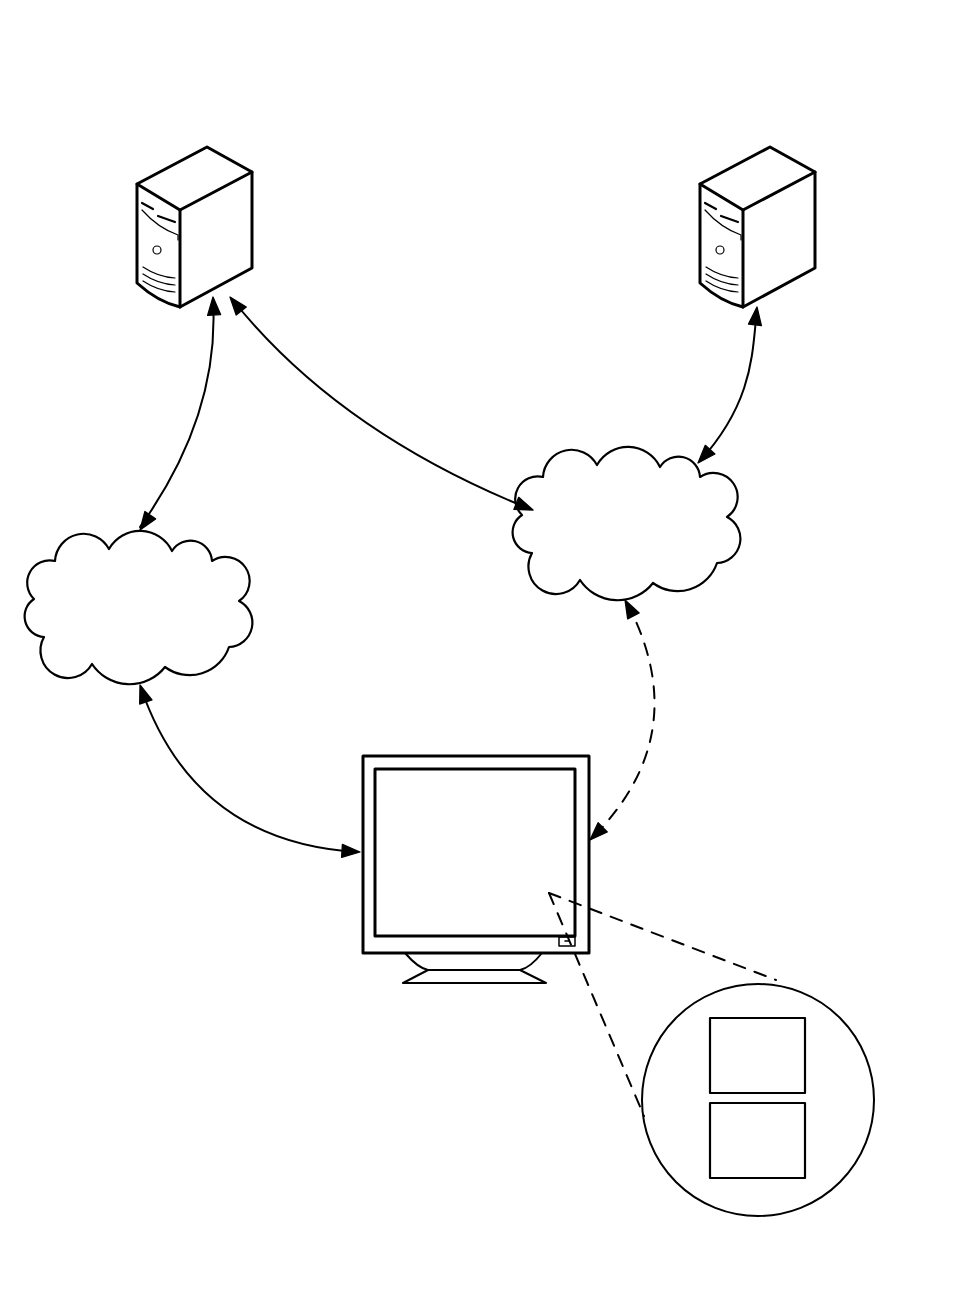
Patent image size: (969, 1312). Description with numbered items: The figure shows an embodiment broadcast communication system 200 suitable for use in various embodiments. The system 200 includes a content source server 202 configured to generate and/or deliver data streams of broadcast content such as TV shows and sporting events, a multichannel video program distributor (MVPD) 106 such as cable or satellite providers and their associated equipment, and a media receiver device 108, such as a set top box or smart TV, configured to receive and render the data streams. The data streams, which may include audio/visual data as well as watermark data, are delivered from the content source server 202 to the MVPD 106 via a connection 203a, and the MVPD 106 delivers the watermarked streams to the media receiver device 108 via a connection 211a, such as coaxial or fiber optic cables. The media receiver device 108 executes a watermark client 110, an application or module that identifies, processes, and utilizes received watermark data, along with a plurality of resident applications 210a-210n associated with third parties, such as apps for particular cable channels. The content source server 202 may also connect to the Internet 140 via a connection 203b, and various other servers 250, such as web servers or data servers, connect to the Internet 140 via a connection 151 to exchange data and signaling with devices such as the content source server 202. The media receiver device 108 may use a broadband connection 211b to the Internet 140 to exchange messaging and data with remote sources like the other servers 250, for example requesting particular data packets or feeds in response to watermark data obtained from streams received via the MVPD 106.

The broadcast communication system 200 is at (112, 103).
The content source server 202 is at (238, 160).
The other servers 250 is at (786, 153).
The Internet 140 is at (602, 556).
The multichannel video program distributor (MVPD) 106 is at (114, 640).
The connection 151 is at (728, 403).
The connection 203a is at (227, 433).
The connection 203b is at (332, 433).
The connection 211a is at (193, 817).
The connection 211b is at (623, 740).
The media receiver device 108 is at (455, 882).
The watermark client 110 is at (778, 1068).
The resident applications 210a-210n is at (725, 1138).